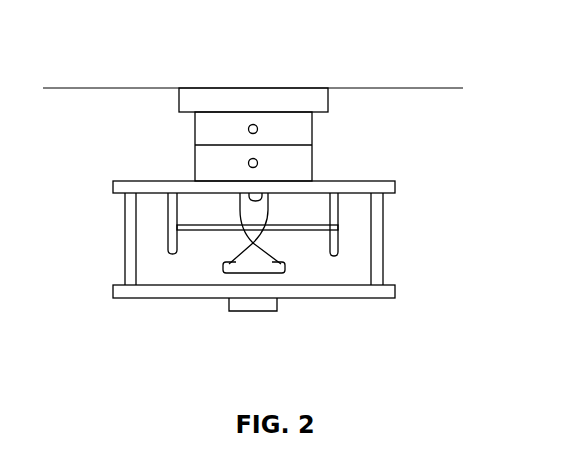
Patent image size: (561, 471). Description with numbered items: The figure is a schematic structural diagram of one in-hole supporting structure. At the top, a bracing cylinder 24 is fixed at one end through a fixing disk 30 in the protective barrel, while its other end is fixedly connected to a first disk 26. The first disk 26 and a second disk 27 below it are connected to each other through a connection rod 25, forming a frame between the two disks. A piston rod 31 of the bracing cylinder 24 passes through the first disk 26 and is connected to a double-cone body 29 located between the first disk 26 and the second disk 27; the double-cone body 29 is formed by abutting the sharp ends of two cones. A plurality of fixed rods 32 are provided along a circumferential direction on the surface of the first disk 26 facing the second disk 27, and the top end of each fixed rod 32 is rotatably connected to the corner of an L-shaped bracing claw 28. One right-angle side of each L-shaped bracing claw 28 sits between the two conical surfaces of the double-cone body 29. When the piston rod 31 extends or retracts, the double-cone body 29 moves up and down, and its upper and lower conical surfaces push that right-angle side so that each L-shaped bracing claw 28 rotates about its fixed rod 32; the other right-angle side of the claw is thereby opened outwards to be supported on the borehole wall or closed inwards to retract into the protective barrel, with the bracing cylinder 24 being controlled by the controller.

The bracing cylinder 24 is at (286, 160).
The connection rod 25 is at (132, 253).
The first disk 26 is at (150, 188).
The second disk 27 is at (150, 292).
The L-shaped bracing claw 28 is at (210, 232).
The double-cone body 29 is at (255, 262).
The fixing disk 30 is at (282, 98).
The piston rod 31 is at (263, 198).
The fixed rod 32 is at (172, 212).